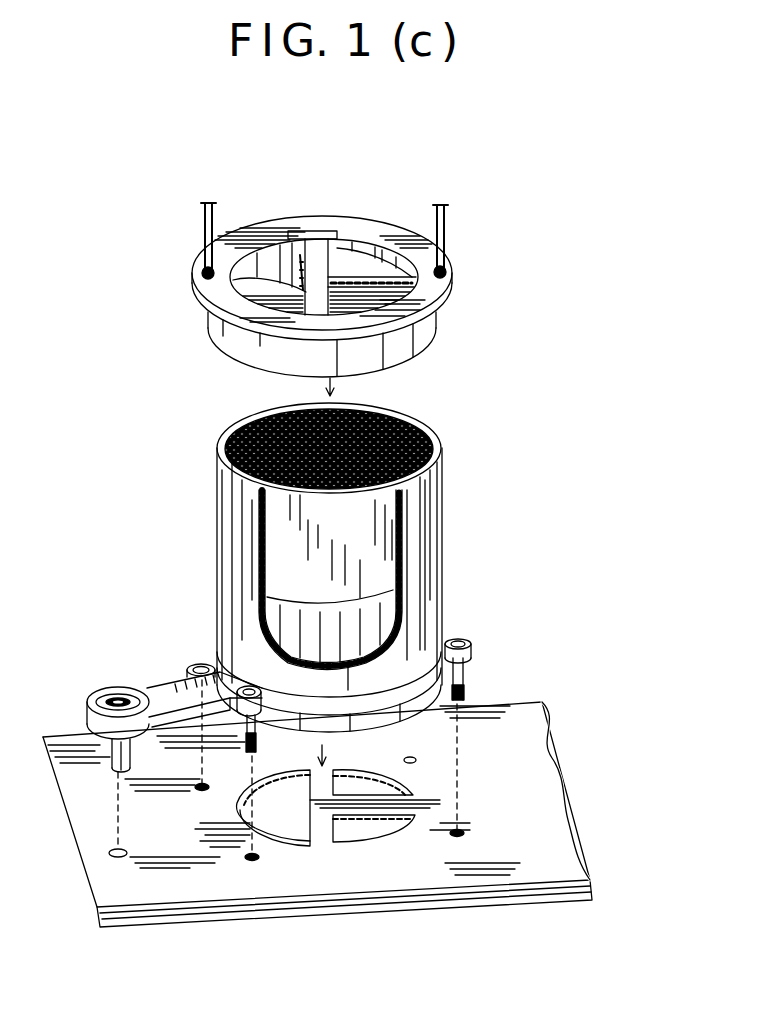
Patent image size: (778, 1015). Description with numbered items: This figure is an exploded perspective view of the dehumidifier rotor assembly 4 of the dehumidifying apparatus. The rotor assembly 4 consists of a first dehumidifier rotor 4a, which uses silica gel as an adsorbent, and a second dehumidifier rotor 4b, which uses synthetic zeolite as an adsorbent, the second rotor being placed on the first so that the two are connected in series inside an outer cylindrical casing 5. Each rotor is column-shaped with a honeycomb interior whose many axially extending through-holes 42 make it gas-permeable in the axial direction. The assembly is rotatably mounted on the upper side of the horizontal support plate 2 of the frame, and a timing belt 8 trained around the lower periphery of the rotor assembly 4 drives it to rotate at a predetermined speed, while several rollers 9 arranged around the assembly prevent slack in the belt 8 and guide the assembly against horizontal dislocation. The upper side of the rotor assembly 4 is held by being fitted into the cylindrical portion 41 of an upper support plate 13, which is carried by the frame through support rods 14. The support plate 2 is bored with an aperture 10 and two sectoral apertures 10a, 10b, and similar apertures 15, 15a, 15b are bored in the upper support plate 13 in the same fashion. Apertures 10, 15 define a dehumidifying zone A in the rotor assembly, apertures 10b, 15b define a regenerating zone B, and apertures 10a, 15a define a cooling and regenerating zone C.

The horizontal support plate 2 is at (532, 865).
The dehumidifier rotor assembly 4 is at (413, 578).
The first dehumidifier rotor 4a is at (380, 636).
The second dehumidifier rotor 4b is at (357, 537).
The outer cylindrical casing 5 is at (430, 490).
The timing belt 8 is at (160, 683).
The rollers 9 is at (245, 688).
The aperture 10 is at (272, 815).
The sectoral aperture 10a is at (340, 754).
The sectoral aperture 10b is at (352, 830).
The support plate 13 is at (432, 286).
The support rods 14 is at (206, 225).
The aperture 15 is at (285, 255).
The aperture 15a is at (362, 252).
The aperture 15b is at (377, 297).
The cylindrical portion 41 is at (440, 322).
The through-holes 42 is at (252, 418).
The dehumidifying zone A is at (297, 822).
The regenerating zone B is at (378, 827).
The cooling and regenerating zone C is at (381, 791).